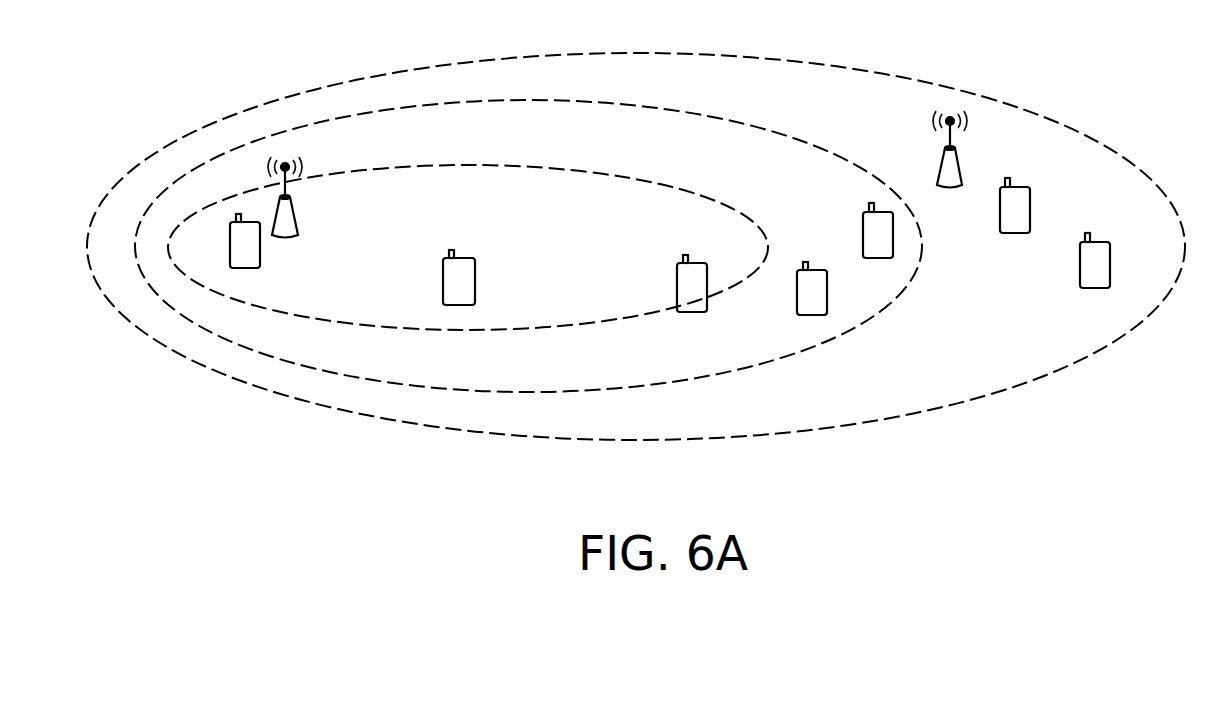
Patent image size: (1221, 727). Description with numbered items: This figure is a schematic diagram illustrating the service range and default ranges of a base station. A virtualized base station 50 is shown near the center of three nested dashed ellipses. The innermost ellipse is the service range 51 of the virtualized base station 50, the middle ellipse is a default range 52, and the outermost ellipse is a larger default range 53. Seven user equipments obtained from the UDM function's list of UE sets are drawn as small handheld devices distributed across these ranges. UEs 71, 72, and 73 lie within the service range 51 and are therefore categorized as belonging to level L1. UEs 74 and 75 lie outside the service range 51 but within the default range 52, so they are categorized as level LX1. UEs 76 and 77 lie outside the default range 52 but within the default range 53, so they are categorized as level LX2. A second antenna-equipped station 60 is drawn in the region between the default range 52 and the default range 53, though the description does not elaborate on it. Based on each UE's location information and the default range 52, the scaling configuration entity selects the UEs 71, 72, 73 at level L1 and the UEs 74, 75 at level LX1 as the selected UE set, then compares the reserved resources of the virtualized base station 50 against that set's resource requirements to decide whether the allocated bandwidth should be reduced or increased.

The virtualized base station 50 is at (290, 218).
The service range 51 is at (632, 178).
The default range 52 is at (778, 130).
The default range 53 is at (916, 79).
The second base station / access point 60 is at (955, 165).
The UE 71 is at (255, 258).
The UE 72 is at (465, 283).
The UE 73 is at (693, 302).
The UE 74 is at (818, 293).
The UE 75 is at (866, 229).
The UE 76 is at (1014, 222).
The UE 77 is at (1085, 275).